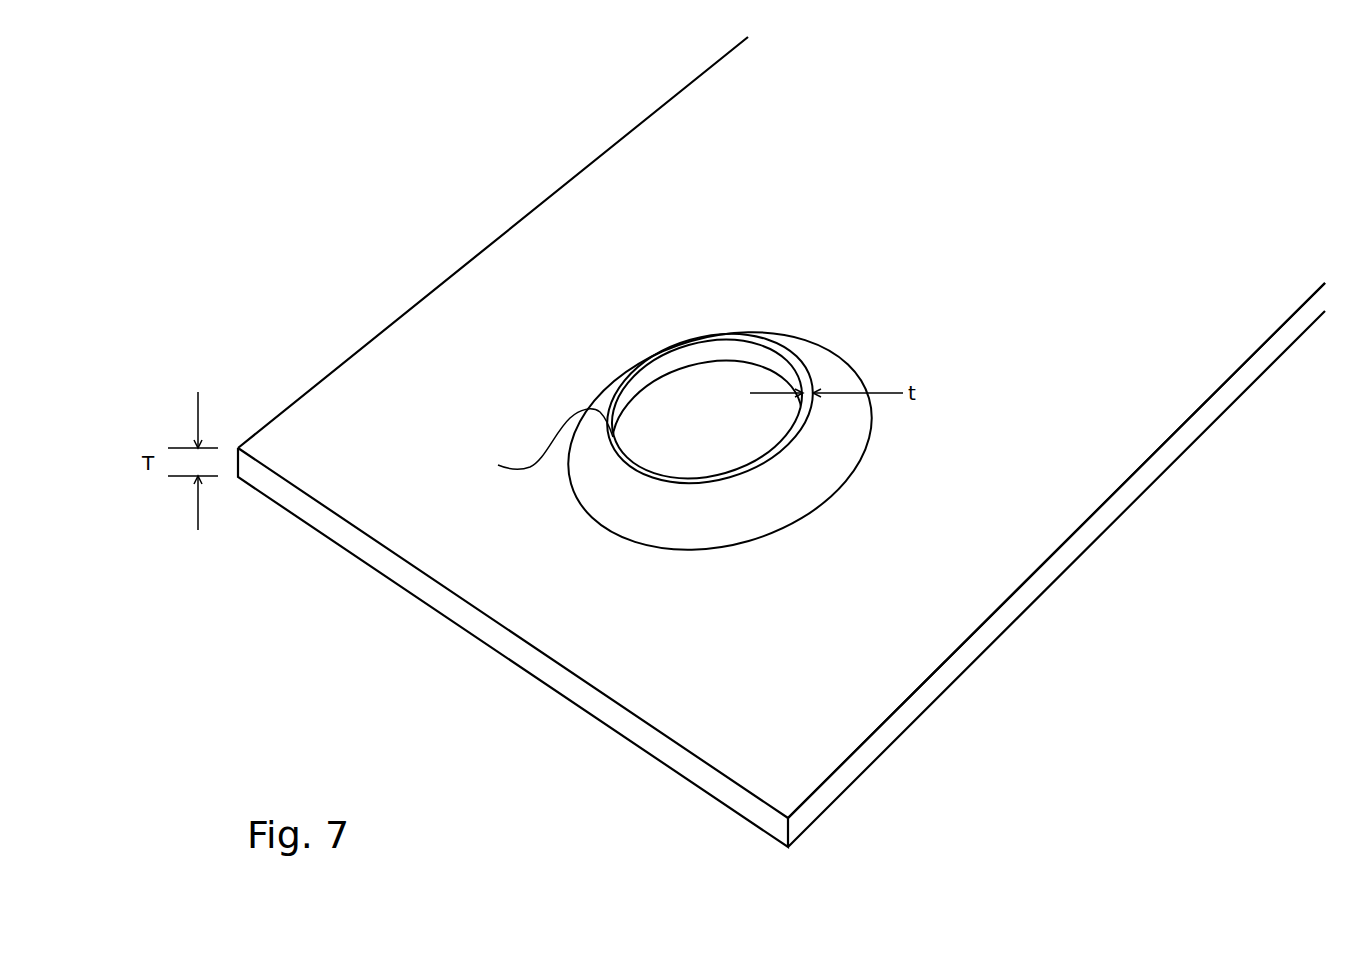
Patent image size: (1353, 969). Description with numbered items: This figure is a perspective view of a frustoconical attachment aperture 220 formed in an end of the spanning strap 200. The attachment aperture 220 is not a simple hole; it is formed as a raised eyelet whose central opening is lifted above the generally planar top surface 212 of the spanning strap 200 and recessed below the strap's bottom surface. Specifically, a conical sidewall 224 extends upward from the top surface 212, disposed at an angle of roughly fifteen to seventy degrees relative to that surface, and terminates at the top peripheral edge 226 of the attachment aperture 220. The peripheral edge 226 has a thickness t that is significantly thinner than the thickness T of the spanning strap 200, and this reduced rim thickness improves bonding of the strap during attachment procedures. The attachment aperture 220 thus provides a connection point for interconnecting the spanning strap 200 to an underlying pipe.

The spanning strap 200 is at (1252, 401).
The top surface 212 is at (769, 684).
The attachment aperture 220 is at (729, 440).
The conical sidewall 224 is at (808, 475).
The peripheral edge 226 is at (536, 442).